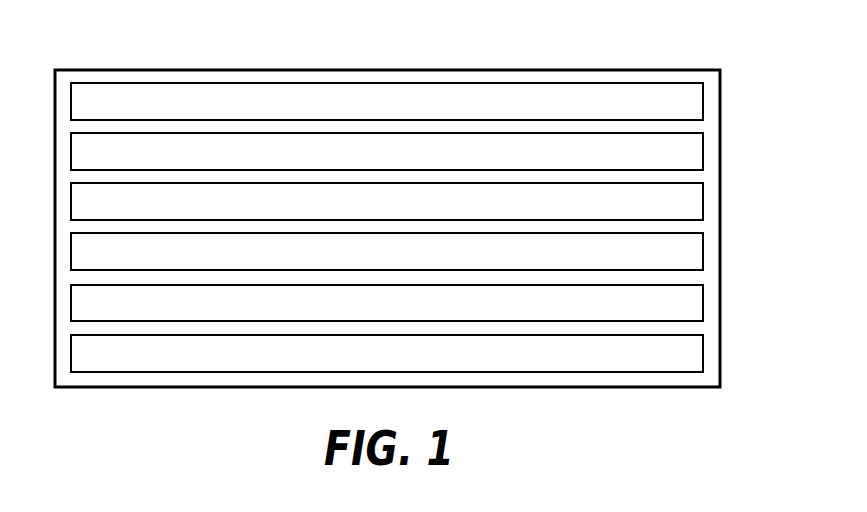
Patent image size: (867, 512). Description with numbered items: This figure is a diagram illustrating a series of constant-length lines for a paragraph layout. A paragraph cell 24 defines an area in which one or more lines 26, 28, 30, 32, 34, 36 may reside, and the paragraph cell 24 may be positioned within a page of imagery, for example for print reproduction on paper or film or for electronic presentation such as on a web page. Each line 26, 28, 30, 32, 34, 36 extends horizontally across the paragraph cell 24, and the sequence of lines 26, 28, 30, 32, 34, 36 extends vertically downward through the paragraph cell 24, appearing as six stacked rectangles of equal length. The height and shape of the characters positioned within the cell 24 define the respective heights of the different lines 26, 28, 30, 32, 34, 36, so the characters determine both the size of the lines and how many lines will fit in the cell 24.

The paragraph cell 24 is at (175, 65).
The line 26 is at (703, 100).
The line 28 is at (703, 150).
The line 30 is at (703, 200).
The line 32 is at (703, 250).
The line 34 is at (703, 300).
The line 36 is at (703, 351).